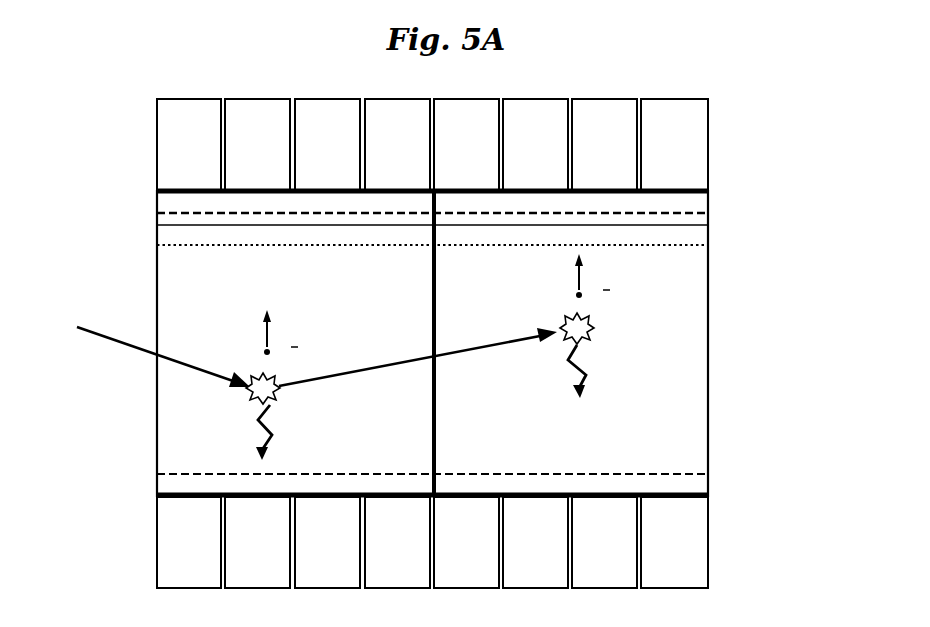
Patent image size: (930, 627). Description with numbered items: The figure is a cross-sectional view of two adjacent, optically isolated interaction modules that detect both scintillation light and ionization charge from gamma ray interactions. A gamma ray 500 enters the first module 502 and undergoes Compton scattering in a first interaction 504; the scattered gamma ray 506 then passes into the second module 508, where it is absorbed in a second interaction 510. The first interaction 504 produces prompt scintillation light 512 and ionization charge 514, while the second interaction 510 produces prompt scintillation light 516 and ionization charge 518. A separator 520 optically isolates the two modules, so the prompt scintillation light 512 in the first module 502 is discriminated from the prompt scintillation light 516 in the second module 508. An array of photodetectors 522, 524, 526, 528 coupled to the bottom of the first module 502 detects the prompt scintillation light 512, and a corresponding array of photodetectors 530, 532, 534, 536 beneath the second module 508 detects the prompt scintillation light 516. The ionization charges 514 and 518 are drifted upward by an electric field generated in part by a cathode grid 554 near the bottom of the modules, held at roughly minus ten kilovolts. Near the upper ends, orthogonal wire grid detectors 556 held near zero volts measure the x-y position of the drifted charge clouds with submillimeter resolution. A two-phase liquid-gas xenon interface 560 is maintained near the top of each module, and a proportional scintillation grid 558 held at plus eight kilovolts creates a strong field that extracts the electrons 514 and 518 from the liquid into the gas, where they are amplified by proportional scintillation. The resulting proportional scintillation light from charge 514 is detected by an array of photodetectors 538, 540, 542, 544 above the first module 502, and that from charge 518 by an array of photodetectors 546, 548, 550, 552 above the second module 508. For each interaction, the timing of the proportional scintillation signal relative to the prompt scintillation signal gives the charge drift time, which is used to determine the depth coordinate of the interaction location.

The gamma ray 500 is at (93, 328).
The first module 502 is at (285, 286).
The first interaction 504 is at (282, 392).
The scattered gamma ray 506 is at (388, 360).
The second module 508 is at (563, 467).
The second interaction 510 is at (593, 335).
The prompt scintillation light 512 is at (256, 432).
The ionization charge 514 is at (263, 352).
The prompt scintillation light 516 is at (570, 357).
The ionization charge 518 is at (575, 295).
The separator 520 is at (437, 407).
The photodetector 522 is at (169, 559).
The photodetector 524 is at (237, 559).
The photodetector 526 is at (307, 559).
The photodetector 528 is at (377, 559).
The photodetector 530 is at (446, 559).
The photodetector 532 is at (515, 559).
The photodetector 534 is at (584, 559).
The photodetector 536 is at (654, 559).
The photodetector 538 is at (169, 161).
The photodetector 540 is at (237, 161).
The photodetector 542 is at (307, 161).
The photodetector 544 is at (377, 161).
The photodetector 546 is at (446, 161).
The photodetector 548 is at (515, 161).
The photodetector 550 is at (584, 161).
The photodetector 552 is at (654, 161).
The cathode grid 554 is at (708, 474).
The orthogonal wire grid detectors 556 is at (708, 247).
The proportional scintillation grid 558 is at (157, 213).
The liquid-gas xenon interface 560 is at (708, 225).